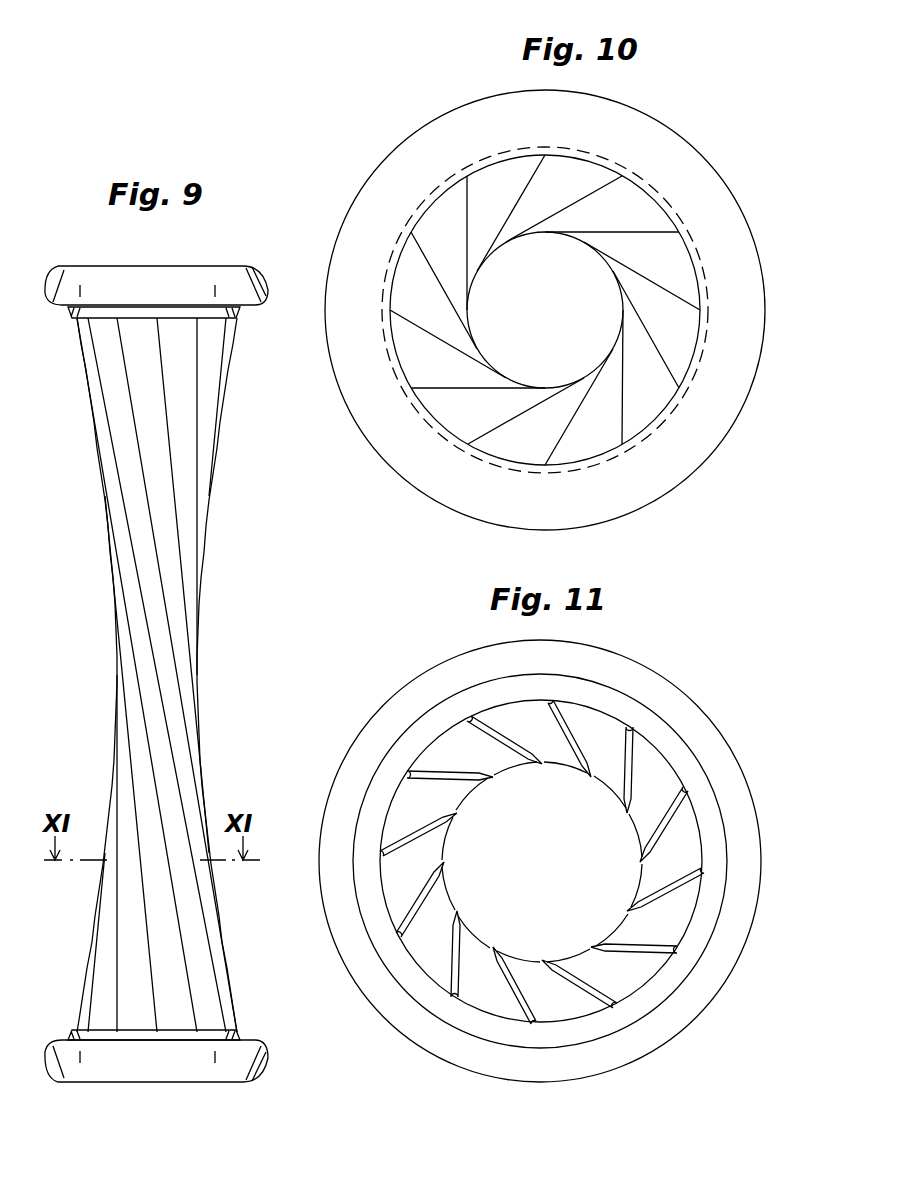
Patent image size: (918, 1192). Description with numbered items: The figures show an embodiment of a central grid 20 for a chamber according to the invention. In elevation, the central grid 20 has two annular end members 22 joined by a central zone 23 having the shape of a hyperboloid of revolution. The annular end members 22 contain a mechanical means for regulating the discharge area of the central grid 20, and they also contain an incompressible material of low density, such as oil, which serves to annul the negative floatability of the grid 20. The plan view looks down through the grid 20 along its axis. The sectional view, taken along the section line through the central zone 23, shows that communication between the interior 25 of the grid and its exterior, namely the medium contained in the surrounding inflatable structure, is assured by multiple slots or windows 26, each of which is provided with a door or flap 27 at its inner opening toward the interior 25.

In FIG. 9, the central grid 20 is at (201, 716).
In FIG. 9, the annular end member 22 is at (110, 278).
In FIG. 10, the annular end member 22 is at (683, 466).
In FIG. 9, the central zone 23 is at (145, 731).
In FIG. 10, the interior of the grid 25 is at (583, 287).
In FIG. 11, the interior of the grid 25 is at (482, 913).
In FIG. 11, the slots or windows 26 is at (427, 784).
In FIG. 11, the door or flap 27 is at (485, 779).